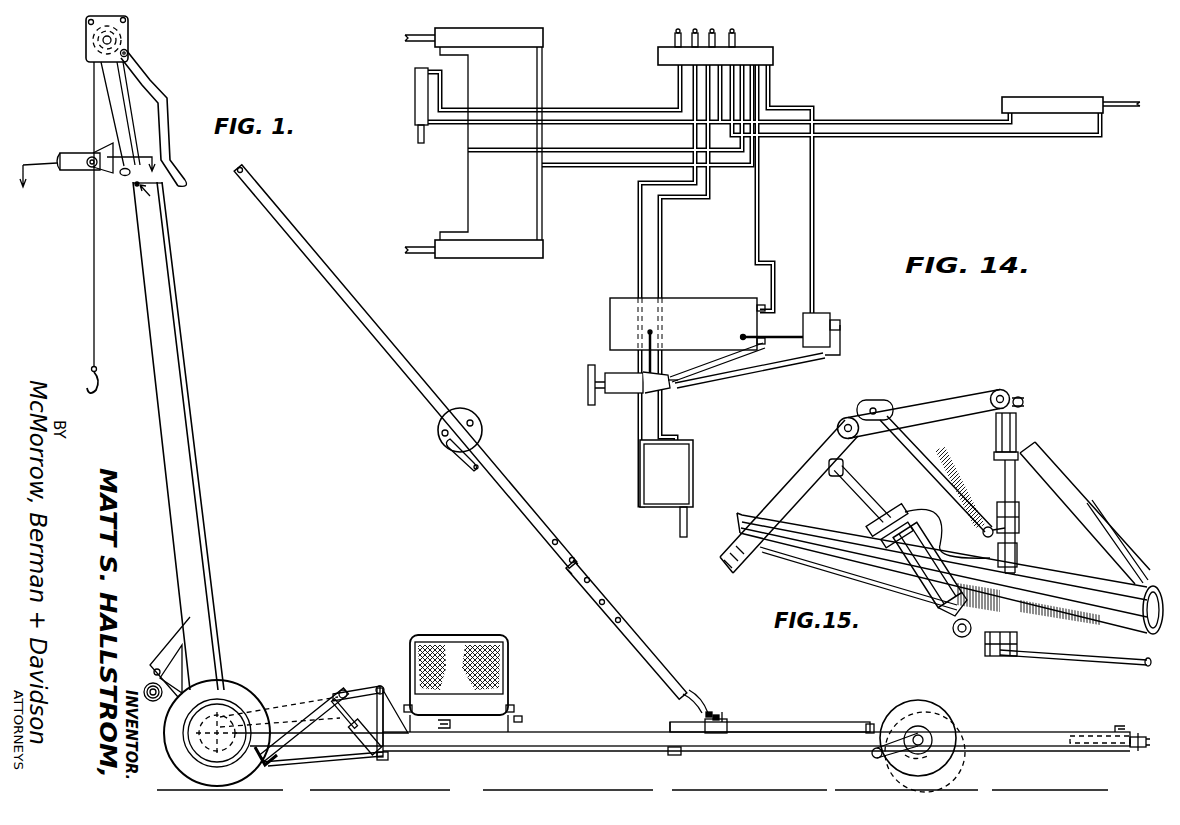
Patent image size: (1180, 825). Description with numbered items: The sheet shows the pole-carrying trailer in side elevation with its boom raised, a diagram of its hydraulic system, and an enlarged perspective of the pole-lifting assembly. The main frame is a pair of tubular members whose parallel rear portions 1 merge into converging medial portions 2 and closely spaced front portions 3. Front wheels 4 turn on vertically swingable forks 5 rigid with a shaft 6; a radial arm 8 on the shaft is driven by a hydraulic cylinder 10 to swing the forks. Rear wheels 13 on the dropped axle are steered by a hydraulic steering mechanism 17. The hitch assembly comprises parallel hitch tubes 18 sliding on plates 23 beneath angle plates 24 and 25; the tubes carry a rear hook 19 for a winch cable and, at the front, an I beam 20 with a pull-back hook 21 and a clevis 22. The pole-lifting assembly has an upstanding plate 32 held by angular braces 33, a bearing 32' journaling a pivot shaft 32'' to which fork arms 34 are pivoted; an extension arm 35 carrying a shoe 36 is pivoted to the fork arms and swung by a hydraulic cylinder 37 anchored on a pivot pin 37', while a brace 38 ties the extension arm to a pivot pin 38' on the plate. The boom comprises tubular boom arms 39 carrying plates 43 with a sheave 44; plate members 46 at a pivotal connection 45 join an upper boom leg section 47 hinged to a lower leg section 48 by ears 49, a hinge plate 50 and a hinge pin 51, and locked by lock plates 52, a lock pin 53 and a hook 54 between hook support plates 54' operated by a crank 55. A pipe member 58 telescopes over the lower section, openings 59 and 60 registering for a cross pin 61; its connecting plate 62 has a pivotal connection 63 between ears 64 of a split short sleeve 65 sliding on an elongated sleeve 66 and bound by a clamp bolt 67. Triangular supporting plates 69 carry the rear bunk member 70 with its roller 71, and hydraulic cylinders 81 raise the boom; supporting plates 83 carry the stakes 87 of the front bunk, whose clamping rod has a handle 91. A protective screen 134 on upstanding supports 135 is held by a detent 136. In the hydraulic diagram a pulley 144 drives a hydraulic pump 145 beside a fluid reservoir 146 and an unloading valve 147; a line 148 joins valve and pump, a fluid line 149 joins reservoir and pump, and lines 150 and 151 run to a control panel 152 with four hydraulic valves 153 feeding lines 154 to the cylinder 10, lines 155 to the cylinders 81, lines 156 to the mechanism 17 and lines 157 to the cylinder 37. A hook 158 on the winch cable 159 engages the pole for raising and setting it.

In FIG. 1, the rear portions 1 is at (320, 735).
In FIG. 15, the rear portions 1 is at (835, 552).
In FIG. 1, the medial portions 2 is at (577, 745).
In FIG. 1, the front portions 3 is at (855, 746).
In FIG. 1, the front wheels 4 is at (930, 710).
In FIG. 1, the fork 5 is at (890, 715).
In FIG. 1, the shaft 6 is at (876, 760).
In FIG. 1, the radial arm 8 is at (90, 183).
In FIG. 14, the hydraulic cylinder 10 is at (1050, 97).
In FIG. 1, the rear wheels 13 is at (245, 690).
In FIG. 14, the hydraulic steering mechanism 17 is at (417, 93).
In FIG. 1, the hitch tubes 18 is at (1008, 748).
In FIG. 1, the hook 19 is at (451, 722).
In FIG. 1, the I beam 20 is at (1060, 748).
In FIG. 1, the pull-back hook 21 is at (1116, 728).
In FIG. 1, the clevis 22 is at (1142, 737).
In FIG. 1, the plates 23 is at (670, 756).
In FIG. 1, the angle plate 24 is at (668, 722).
In FIG. 1, the angle plate 25 is at (869, 724).
In FIG. 15, the upstanding plate 32 is at (950, 573).
In FIG. 15, the bearing 32' is at (1028, 490).
In FIG. 15, the pivot shaft 32'' is at (1034, 388).
In FIG. 1, the angular braces 33 is at (393, 698).
In FIG. 15, the angular braces 33 is at (1048, 476).
In FIG. 1, the fork arms 34 is at (350, 690).
In FIG. 15, the fork arms 34 is at (945, 395).
In FIG. 1, the extension arm 35 is at (290, 708).
In FIG. 15, the extension arm 35 is at (800, 480).
In FIG. 1, the shoe 36 is at (264, 768).
In FIG. 1, the hydraulic cylinder 37 is at (322, 766).
In FIG. 14, the hydraulic cylinder 37 is at (680, 488).
In FIG. 15, the hydraulic cylinder 37 is at (909, 548).
In FIG. 15, the pivot pin 37' is at (1068, 651).
In FIG. 1, the brace 38 is at (357, 697).
In FIG. 15, the brace 38 is at (942, 476).
In FIG. 15, the pivot pin 38' is at (1028, 534).
In FIG. 1, the boom arms 39 is at (140, 232).
In FIG. 1, the plates 43 is at (128, 34).
In FIG. 1, the sheave 44 is at (86, 41).
In FIG. 1, the pivotal connection 45 is at (128, 53).
In FIG. 1, the plate members 46 is at (150, 78).
In FIG. 1, the upper boom leg section 47 is at (165, 104).
In FIG. 1, the lower leg section 48 is at (500, 478).
In FIG. 1, the ears 49 is at (482, 430).
In FIG. 1, the hinge plate 50 is at (466, 409).
In FIG. 1, the hinge pin 51 is at (474, 421).
In FIG. 1, the lock plates 52 is at (442, 421).
In FIG. 1, the lock pin 53 is at (441, 433).
In FIG. 1, the hook 54 is at (433, 455).
In FIG. 1, the hook support plates 54' is at (431, 466).
In FIG. 1, the crank 55 is at (474, 470).
In FIG. 1, the pipe member 58 is at (642, 626).
In FIG. 1, the openings 59 is at (568, 552).
In FIG. 1, the openings 60 is at (598, 603).
In FIG. 1, the cross pin 61 is at (578, 588).
In FIG. 1, the connecting plate 62 is at (703, 695).
In FIG. 1, the pivotal connection 63 is at (710, 710).
In FIG. 1, the ears 64 is at (704, 714).
In FIG. 1, the short sleeve 65 is at (724, 712).
In FIG. 1, the elongated sleeve 66 is at (760, 725).
In FIG. 1, the clamp bolt 67 is at (716, 714).
In FIG. 1, the triangular supporting plates 69 is at (185, 622).
In FIG. 1, the rear bunk member 70 is at (155, 672).
In FIG. 1, the roller 71 is at (158, 698).
In FIG. 14, the hydraulic cylinders 81 is at (508, 45).
In FIG. 1, the supporting plates 83 is at (120, 174).
In FIG. 1, the stake 87 is at (72, 153).
In FIG. 1, the handle 91 is at (90, 168).
In FIG. 1, the protective screen 134 is at (450, 640).
In FIG. 1, the upstanding supports 135 is at (412, 709).
In FIG. 1, the detent 136 is at (522, 719).
In FIG. 14, the pulley 144 is at (588, 375).
In FIG. 14, the hydraulic pump 145 is at (625, 396).
In FIG. 14, the fluid reservoir 146 is at (700, 310).
In FIG. 14, the unloading valve 147 is at (820, 360).
In FIG. 14, the line 148 is at (776, 336).
In FIG. 14, the fluid line 149 is at (717, 380).
In FIG. 14, the line 150 is at (814, 247).
In FIG. 14, the line 151 is at (759, 242).
In FIG. 14, the control panel 152 is at (756, 50).
In FIG. 14, the hydraulic valves 153 is at (732, 30).
In FIG. 14, the lines 154 is at (910, 135).
In FIG. 14, the lines 155 is at (602, 165).
In FIG. 14, the lines 156 is at (598, 107).
In FIG. 14, the lines 157 is at (640, 222).
In FIG. 1, the hook 158 is at (97, 392).
In FIG. 1, the winch cable 159 is at (92, 298).